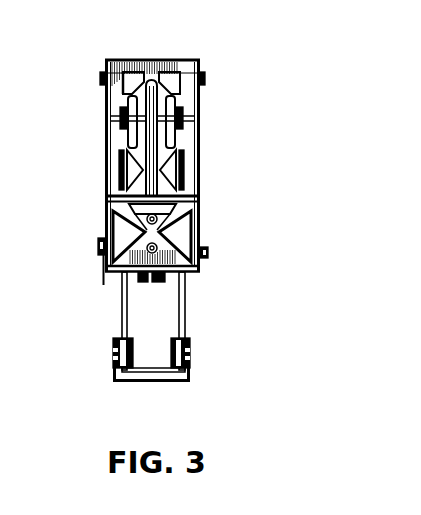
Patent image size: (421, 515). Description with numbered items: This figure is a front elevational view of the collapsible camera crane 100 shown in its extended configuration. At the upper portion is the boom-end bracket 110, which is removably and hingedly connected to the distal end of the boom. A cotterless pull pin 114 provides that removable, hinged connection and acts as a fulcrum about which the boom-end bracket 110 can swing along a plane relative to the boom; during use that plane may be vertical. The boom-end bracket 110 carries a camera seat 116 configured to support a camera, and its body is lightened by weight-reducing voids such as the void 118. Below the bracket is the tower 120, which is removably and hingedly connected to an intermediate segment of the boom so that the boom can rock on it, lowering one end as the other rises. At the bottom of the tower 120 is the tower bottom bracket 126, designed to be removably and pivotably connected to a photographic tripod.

The collapsible camera crane 100 is at (218, 23).
The boom-end bracket 110 is at (118, 60).
The cotterless pull pin 114 is at (102, 248).
The camera seat 116 is at (212, 256).
The void 118 is at (187, 118).
The tower 120 is at (122, 313).
The tower bottom bracket 126 is at (190, 375).